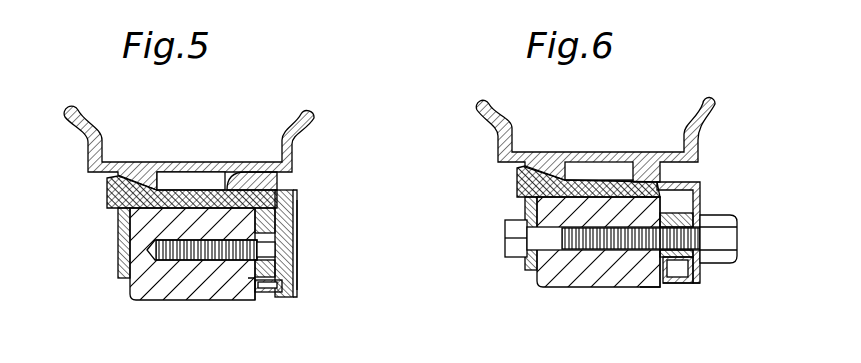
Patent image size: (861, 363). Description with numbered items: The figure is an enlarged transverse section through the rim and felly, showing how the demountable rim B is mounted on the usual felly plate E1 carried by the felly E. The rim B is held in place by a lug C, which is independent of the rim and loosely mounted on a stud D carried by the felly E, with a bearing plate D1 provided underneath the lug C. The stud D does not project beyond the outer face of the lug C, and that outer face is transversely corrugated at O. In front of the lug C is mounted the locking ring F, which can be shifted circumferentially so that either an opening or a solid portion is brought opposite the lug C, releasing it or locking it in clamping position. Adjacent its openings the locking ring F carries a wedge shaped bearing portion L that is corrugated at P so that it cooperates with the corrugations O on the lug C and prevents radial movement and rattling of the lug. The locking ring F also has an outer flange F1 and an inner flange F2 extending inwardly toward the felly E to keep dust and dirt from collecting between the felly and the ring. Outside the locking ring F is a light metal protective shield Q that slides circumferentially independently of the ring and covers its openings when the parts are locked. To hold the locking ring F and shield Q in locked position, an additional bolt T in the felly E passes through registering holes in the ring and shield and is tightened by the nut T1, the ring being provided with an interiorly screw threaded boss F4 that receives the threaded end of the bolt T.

In FIG. 5, the demountable rim B is at (187, 162).
In FIG. 6, the demountable rim B is at (585, 152).
In FIG. 5, the lug C is at (272, 178).
In FIG. 5, the stud D is at (147, 250).
In FIG. 5, the bearing plate D1 is at (270, 232).
In FIG. 5, the felly E is at (192, 280).
In FIG. 6, the felly E is at (580, 280).
In FIG. 5, the felly plate E1 is at (140, 203).
In FIG. 6, the felly plate E1 is at (527, 187).
In FIG. 5, the wedge shaped bearing portion L is at (280, 213).
In FIG. 5, the protective ring or shield Q is at (297, 243).
In FIG. 6, the protective ring or shield Q is at (702, 268).
In FIG. 5, the corrugations P is at (297, 273).
In FIG. 5, the corrugations O is at (248, 282).
In FIG. 5, the inner flange F2 is at (273, 297).
In FIG. 6, the inner flange F2 is at (680, 283).
In FIG. 6, the outer flange F1 is at (667, 180).
In FIG. 6, the nut T1 is at (692, 216).
In FIG. 6, the bolt T is at (720, 233).
In FIG. 6, the interiorly screw threaded boss or enlargement F4 is at (647, 283).
In FIG. 6, the locking ring F is at (693, 283).